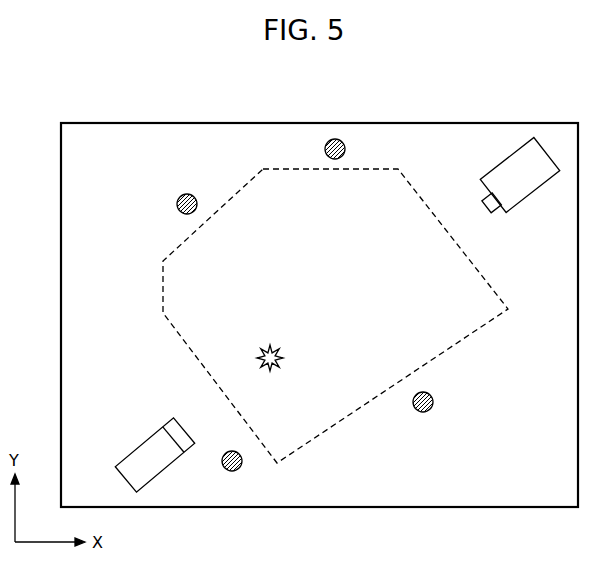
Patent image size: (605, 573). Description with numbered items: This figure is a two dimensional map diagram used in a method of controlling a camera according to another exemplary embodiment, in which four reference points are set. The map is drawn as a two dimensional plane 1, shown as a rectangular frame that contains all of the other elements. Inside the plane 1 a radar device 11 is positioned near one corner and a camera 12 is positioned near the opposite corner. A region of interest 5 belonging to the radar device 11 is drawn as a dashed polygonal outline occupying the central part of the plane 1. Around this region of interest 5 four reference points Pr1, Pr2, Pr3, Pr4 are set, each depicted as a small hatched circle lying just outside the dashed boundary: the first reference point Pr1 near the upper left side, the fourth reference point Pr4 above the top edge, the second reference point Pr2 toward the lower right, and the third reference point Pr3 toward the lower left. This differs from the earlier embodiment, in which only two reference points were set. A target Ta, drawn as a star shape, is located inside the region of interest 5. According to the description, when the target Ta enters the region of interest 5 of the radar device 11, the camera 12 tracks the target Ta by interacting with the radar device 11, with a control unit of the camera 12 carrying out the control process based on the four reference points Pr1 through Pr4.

The two dimensional plane 1 is at (413, 123).
The region of interest 5 is at (163, 288).
The radar device 11 is at (142, 440).
The camera 12 is at (537, 190).
The first reference point Pr1 is at (192, 196).
The second reference point Pr2 is at (430, 410).
The third reference point Pr3 is at (239, 469).
The fourth reference point Pr4 is at (345, 149).
The target Ta is at (272, 371).